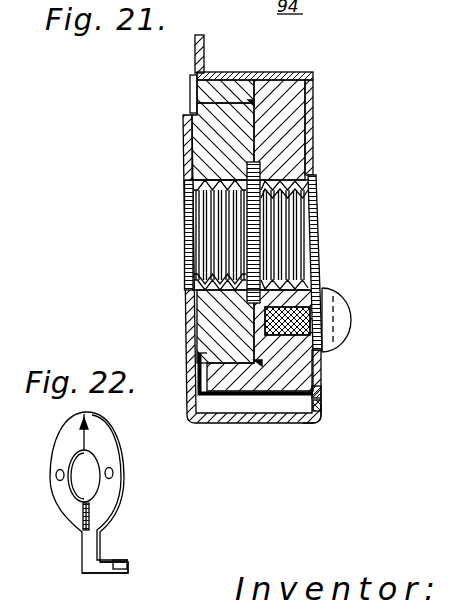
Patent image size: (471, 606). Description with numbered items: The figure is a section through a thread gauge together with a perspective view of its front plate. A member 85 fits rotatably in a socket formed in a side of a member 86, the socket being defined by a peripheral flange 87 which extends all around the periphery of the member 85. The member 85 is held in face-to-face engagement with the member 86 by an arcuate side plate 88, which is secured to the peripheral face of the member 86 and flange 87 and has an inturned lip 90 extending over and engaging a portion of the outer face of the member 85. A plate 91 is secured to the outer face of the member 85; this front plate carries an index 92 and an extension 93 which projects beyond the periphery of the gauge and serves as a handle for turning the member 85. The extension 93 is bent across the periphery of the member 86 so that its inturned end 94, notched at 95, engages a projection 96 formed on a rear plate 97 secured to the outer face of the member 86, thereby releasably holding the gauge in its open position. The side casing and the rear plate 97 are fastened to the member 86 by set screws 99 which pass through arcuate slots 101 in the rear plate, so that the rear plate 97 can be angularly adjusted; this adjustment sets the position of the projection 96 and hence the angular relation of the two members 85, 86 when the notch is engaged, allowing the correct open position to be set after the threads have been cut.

In FIG. 21, the member 85 is at (218, 135).
In FIG. 21, the member 86 is at (306, 118).
In FIG. 21, the peripheral flange 87 is at (228, 93).
In FIG. 21, the arcuate side plate 88 is at (277, 396).
In FIG. 21, the inturned lip 90 is at (192, 96).
In FIG. 21, the plate 91 is at (184, 158).
In FIG. 22, the plate 91 is at (62, 444).
In FIG. 22, the index 92 is at (91, 425).
In FIG. 22, the extension 93 is at (85, 548).
In FIG. 21, the inturned end 94 is at (318, 420).
In FIG. 22, the inturned end 94 is at (128, 567).
In FIG. 21, the notch 95 is at (318, 407).
In FIG. 22, the notch 95 is at (120, 562).
In FIG. 21, the projection 96 is at (315, 393).
In FIG. 21, the rear plate 97 is at (312, 157).
In FIG. 21, the set screw 99 is at (337, 320).
In FIG. 21, the arcuate slot 101 is at (318, 355).